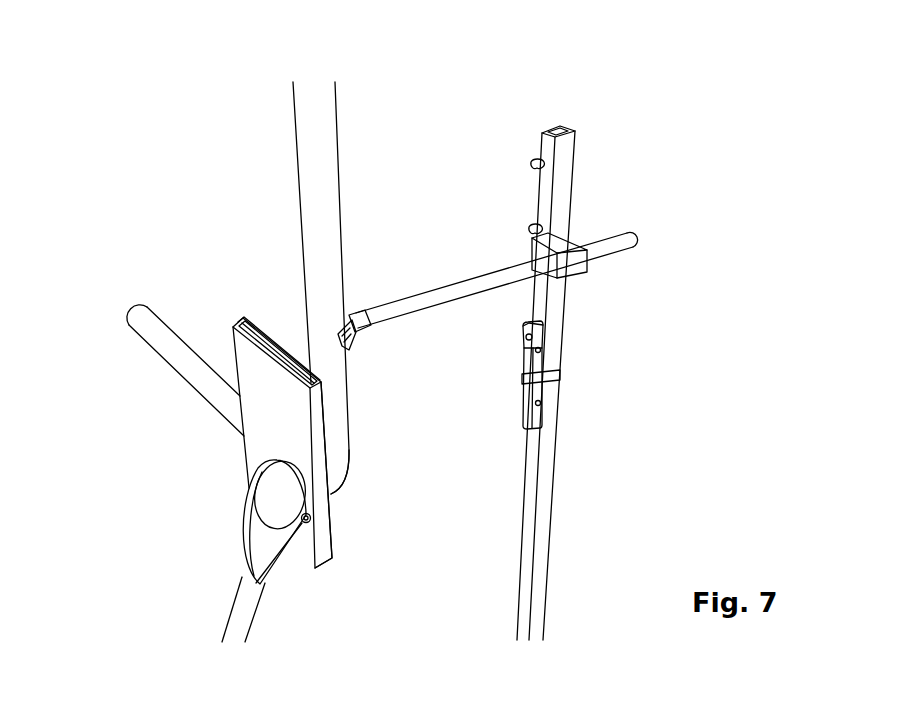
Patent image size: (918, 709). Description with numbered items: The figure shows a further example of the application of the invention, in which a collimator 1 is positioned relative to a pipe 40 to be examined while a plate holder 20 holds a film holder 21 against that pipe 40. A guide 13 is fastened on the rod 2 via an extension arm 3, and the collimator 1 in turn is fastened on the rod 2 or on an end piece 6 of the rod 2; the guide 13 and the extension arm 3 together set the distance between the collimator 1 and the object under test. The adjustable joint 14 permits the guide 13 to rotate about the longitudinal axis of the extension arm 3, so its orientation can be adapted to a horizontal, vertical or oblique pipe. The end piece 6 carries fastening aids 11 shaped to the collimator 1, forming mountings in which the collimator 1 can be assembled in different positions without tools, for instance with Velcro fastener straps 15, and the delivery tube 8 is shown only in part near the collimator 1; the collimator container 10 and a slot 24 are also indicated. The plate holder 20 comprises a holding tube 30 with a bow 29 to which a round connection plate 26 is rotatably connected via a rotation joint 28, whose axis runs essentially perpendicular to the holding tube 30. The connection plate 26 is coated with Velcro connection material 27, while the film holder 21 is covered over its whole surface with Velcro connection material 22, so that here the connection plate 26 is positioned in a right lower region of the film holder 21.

The collimator 1 is at (538, 338).
The rod 2 is at (553, 482).
The extension arm 3 is at (433, 296).
The end piece 6 is at (563, 316).
The delivery tube 8 is at (522, 400).
The collimator container 10 is at (632, 149).
The fastening aid 11 is at (531, 164).
The guide 13 is at (350, 346).
The adjustable joint 14 is at (583, 276).
The Velcro fastener strap 15 is at (562, 374).
The plate holder 20 is at (120, 582).
The film holder 21 is at (334, 556).
The Velcro connection material 22 is at (258, 448).
The slot 24 is at (256, 332).
The connection plate 26 is at (283, 519).
The Velcro connection material 27 is at (300, 479).
The rotation joint 28 is at (312, 519).
The bow 29 is at (247, 553).
The holding tube 30 is at (252, 627).
The pipe 40 is at (152, 322).